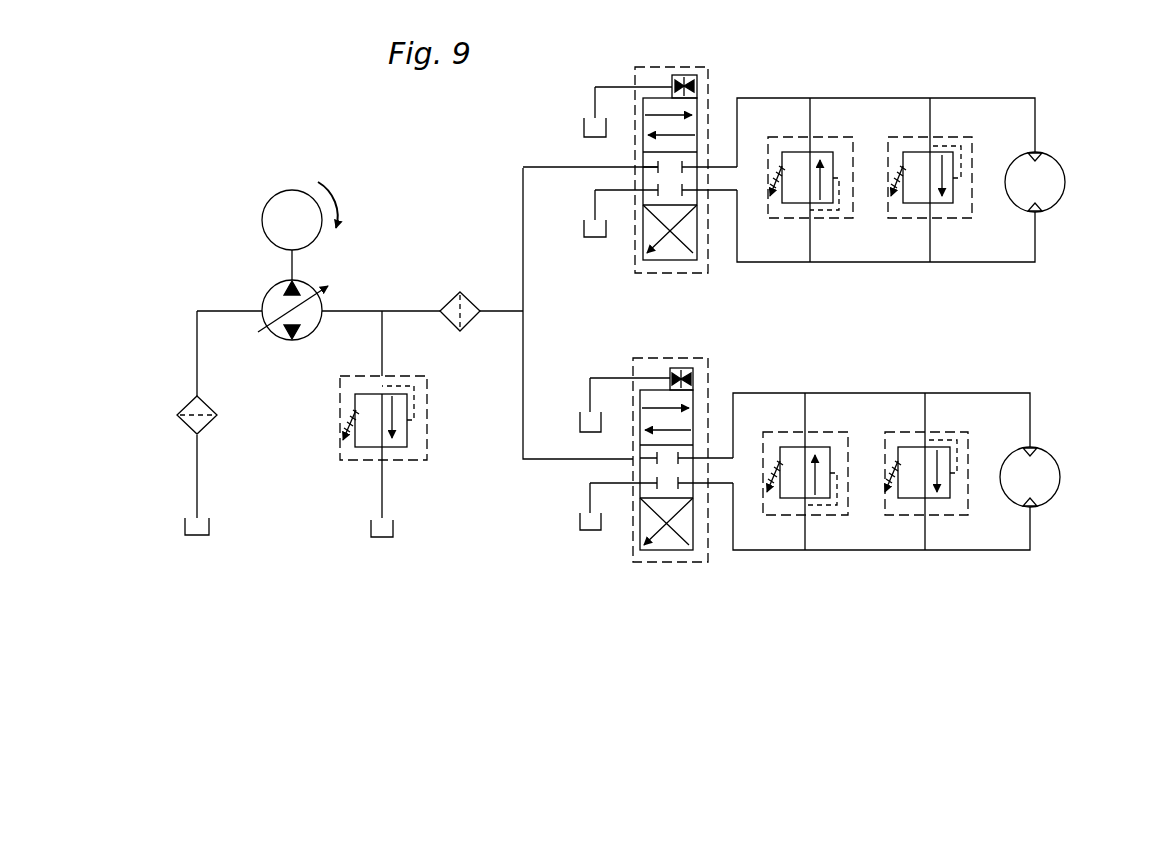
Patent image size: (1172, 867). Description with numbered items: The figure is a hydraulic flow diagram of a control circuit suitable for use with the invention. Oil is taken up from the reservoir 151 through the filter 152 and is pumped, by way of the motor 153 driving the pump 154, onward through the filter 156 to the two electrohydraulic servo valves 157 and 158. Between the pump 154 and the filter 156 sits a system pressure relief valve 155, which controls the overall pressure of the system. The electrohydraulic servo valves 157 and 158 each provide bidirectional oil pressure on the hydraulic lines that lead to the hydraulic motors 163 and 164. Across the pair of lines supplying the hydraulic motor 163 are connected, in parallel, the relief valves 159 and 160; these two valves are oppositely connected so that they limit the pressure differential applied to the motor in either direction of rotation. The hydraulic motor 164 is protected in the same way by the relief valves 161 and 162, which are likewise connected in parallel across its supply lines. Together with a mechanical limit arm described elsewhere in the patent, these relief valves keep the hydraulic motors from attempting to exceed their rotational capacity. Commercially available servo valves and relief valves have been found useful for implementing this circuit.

The reservoir 151 is at (191, 538).
The filter 152 is at (183, 410).
The motor 153 is at (292, 190).
The pump 154 is at (268, 291).
The system pressure relief valve 155 is at (344, 461).
The filter 156 is at (457, 332).
The electrohydraulic servo valve 157 is at (668, 274).
The electrohydraulic servo valve 158 is at (708, 358).
The relief valve 159 is at (770, 219).
The relief valve 160 is at (891, 219).
The relief valve 161 is at (766, 516).
The relief valve 162 is at (888, 516).
The hydraulic motor 163 is at (1065, 182).
The hydraulic motor 164 is at (1060, 477).